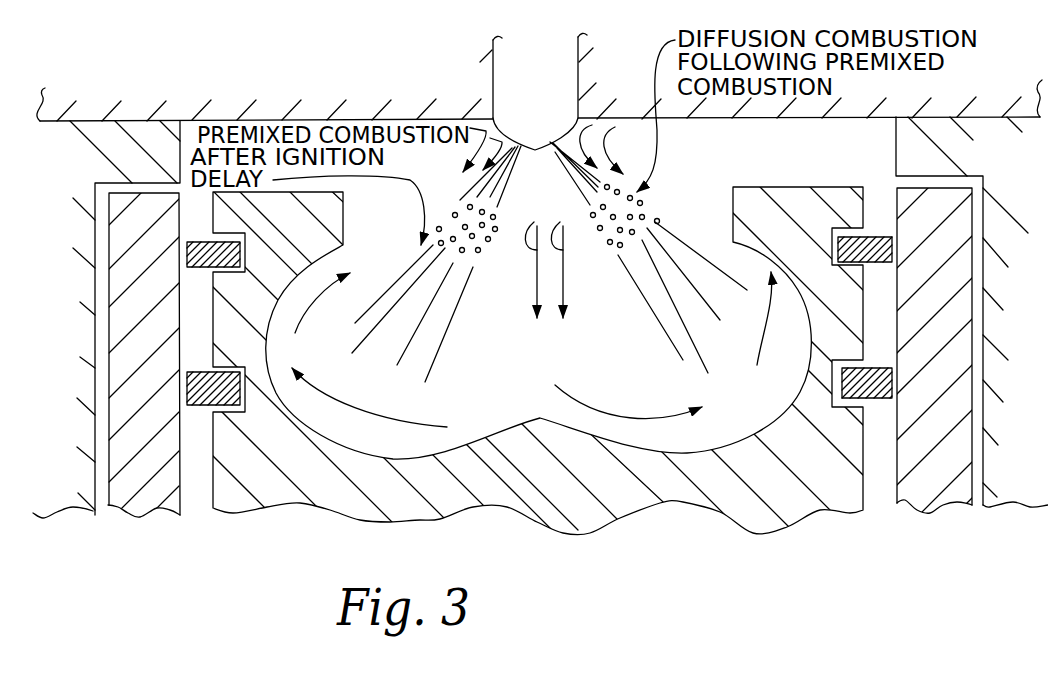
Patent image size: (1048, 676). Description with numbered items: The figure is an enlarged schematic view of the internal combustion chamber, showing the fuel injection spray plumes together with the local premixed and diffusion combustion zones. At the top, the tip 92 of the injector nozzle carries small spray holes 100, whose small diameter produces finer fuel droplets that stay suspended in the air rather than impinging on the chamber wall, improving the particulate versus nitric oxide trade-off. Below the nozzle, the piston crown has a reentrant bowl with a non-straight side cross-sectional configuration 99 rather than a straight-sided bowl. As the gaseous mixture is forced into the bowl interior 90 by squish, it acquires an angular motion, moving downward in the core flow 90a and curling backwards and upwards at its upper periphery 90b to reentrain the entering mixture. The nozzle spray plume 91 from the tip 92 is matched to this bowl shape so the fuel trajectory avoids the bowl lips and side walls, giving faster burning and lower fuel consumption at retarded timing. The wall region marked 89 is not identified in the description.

The combustion bowl wall 89 is at (738, 438).
The bowl interior 90 is at (568, 373).
The core flow 90a is at (541, 253).
The upper periphery 90b is at (320, 288).
The nozzle spray plume 91 is at (437, 362).
The injector nozzle tip 92 is at (493, 85).
The non-straight side cross-sectional configuration 99 is at (540, 518).
The spray holes 100 is at (554, 143).